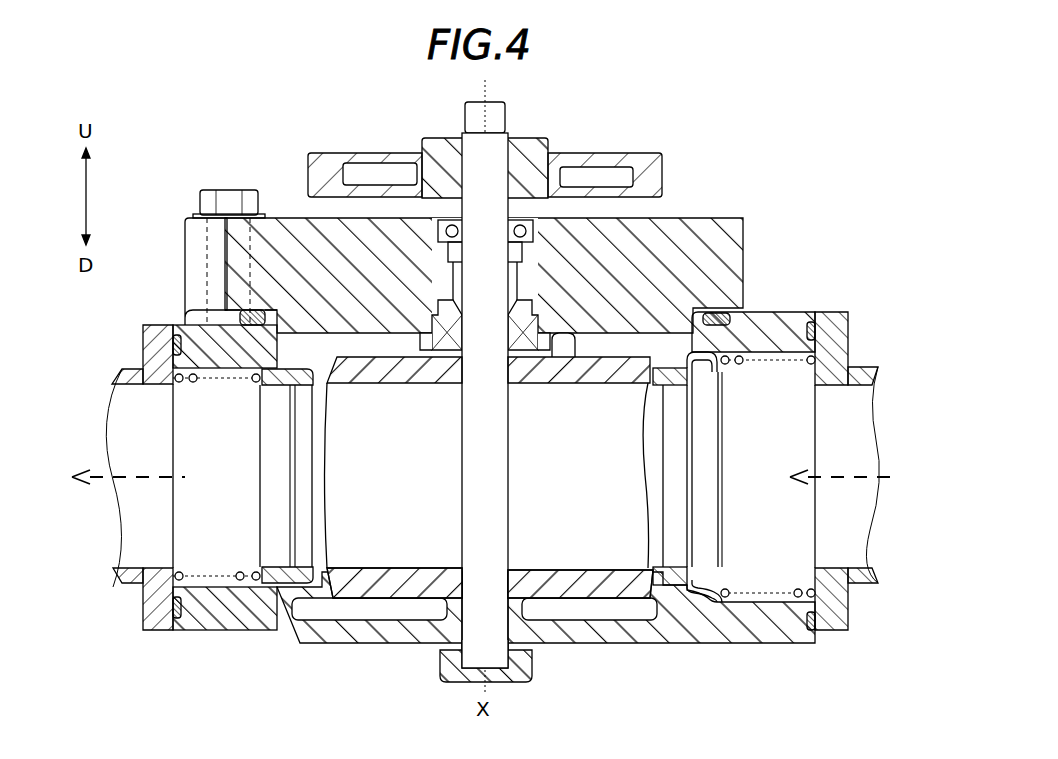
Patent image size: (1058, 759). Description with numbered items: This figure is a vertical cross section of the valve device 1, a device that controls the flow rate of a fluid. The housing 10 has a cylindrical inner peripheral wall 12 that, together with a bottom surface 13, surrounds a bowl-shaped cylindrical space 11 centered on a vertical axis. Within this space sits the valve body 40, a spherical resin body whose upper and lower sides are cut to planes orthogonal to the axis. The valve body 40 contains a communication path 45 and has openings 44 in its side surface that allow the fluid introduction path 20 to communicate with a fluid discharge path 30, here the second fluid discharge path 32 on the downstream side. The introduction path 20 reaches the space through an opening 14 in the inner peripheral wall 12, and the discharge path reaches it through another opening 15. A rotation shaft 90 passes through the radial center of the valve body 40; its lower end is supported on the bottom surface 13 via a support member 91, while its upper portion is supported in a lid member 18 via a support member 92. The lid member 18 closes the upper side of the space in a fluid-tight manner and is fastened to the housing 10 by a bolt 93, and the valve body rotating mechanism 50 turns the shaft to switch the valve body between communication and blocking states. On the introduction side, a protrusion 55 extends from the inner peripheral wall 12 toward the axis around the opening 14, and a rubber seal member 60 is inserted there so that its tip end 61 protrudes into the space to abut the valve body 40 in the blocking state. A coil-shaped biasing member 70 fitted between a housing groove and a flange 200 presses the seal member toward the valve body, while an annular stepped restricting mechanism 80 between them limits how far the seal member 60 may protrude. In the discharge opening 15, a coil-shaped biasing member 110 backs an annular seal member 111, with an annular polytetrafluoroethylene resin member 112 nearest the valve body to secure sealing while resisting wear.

The valve device 1 is at (767, 212).
The housing 10 is at (305, 640).
The cylindrical space 11 is at (395, 607).
The inner peripheral wall 12 is at (280, 607).
The bottom surface 13 is at (345, 607).
The opening 14 is at (712, 453).
The opening 15 is at (246, 455).
The lid member 18 is at (730, 265).
The fluid introduction path 20 is at (790, 450).
The fluid discharge path 30 is at (121, 477).
The second fluid discharge path 32 is at (135, 410).
The valve body 40 is at (573, 603).
The opening 44 is at (342, 493).
The communication path 45 is at (560, 494).
The valve body rotating mechanism 50 is at (387, 128).
The protrusion 55 is at (667, 360).
The seal member 60 is at (650, 387).
The tip end 61 is at (645, 535).
The biasing member 70 is at (803, 592).
The restricting mechanism 80 is at (702, 373).
The rotation shaft 90 is at (472, 485).
The support member 91 is at (433, 650).
The support member 92 is at (525, 282).
The bolt 93 is at (227, 188).
The biasing member 110 is at (243, 587).
The seal member 111 is at (278, 387).
The resin member 112 is at (275, 398).
The flange 200 is at (848, 345).